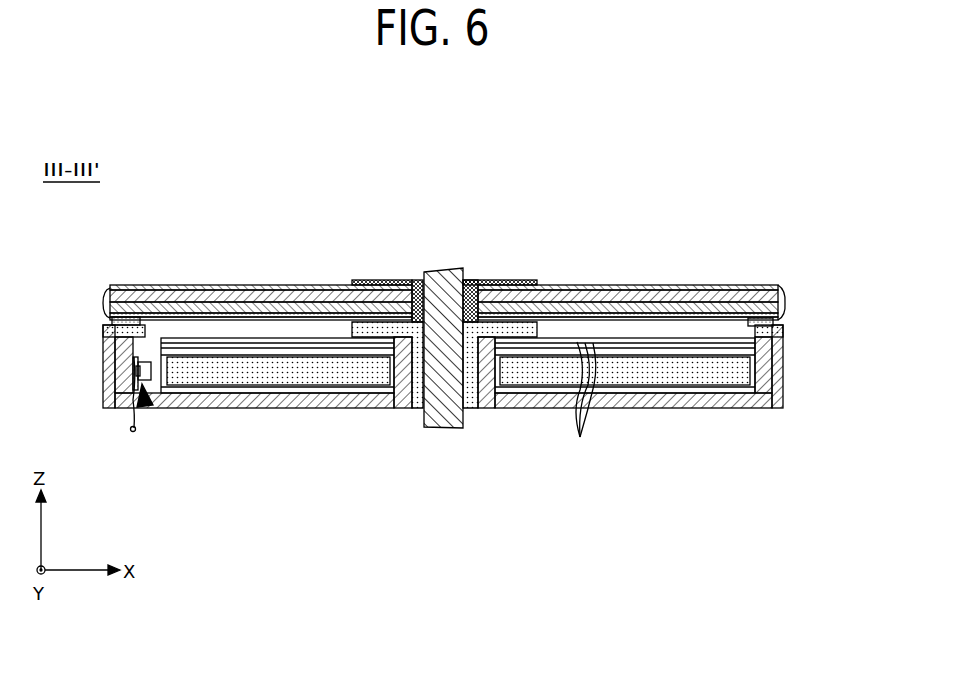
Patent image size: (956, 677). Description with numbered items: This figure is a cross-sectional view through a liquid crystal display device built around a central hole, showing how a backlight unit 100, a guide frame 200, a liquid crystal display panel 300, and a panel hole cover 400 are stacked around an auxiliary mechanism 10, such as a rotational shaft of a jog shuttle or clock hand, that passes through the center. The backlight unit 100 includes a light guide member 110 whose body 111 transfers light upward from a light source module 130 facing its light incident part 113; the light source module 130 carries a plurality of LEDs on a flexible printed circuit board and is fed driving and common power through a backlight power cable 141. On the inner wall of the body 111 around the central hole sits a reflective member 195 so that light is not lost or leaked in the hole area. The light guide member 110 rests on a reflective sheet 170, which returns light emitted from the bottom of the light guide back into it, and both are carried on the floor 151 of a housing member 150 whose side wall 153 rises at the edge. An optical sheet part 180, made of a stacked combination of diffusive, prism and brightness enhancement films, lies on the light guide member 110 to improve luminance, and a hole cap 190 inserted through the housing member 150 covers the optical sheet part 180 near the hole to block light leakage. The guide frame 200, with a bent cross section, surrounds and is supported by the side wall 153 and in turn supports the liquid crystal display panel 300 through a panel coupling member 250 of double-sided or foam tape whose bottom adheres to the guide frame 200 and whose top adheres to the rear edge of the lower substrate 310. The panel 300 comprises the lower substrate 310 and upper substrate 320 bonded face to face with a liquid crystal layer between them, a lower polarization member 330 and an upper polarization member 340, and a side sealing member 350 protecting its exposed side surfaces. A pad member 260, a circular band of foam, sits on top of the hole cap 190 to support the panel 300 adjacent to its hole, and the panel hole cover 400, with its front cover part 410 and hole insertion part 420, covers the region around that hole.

The auxiliary mechanism 10 is at (445, 270).
The backlight unit 100 is at (150, 530).
The light guide member 110 is at (265, 430).
The body 111 is at (273, 378).
The light incident part 113 is at (172, 427).
The light source module 130 is at (146, 408).
The backlight power cable 141 is at (131, 431).
The housing member 150 is at (633, 432).
The floor 151 is at (686, 394).
The side wall 153 is at (753, 394).
The reflective sheet 170 is at (630, 408).
The optical sheet part 180 is at (580, 436).
The hole cap 190 is at (415, 410).
The reflective member 195 is at (385, 410).
The guide frame 200 is at (786, 345).
The panel coupling member 250 is at (774, 322).
The pad member 260 is at (493, 281).
The liquid crystal display panel 300 is at (448, 251).
The lower substrate 310 is at (680, 317).
The upper substrate 320 is at (632, 311).
The lower polarization member 330 is at (583, 228).
The upper polarization member 340 is at (591, 300).
The side sealing member 350 is at (781, 290).
The panel hole cover 400 is at (420, 251).
The front cover part 410 is at (360, 278).
The hole insertion part 420 is at (400, 276).